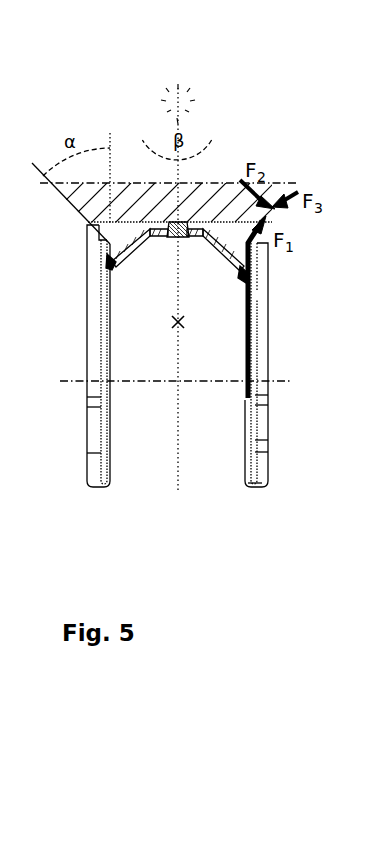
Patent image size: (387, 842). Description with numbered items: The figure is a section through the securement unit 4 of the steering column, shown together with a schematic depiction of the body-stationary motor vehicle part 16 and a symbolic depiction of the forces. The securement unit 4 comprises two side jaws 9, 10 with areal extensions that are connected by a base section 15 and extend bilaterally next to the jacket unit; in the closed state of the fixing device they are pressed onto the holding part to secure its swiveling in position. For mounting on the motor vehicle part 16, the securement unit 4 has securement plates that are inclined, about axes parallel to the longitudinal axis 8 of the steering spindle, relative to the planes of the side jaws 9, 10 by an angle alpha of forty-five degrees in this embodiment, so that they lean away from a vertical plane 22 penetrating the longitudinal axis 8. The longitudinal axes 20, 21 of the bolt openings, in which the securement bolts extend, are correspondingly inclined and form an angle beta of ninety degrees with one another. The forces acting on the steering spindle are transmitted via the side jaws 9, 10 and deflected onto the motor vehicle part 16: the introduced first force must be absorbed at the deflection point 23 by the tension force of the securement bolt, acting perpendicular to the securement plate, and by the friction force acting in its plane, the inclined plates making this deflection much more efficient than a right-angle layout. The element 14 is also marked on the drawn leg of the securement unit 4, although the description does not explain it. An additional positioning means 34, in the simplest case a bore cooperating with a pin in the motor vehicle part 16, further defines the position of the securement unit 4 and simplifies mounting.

The securement unit 4 is at (80, 511).
The longitudinal axis of steering spindle 8 is at (172, 320).
The side jaw 9 is at (100, 322).
The side jaw 10 is at (245, 438).
The leg section 14 is at (212, 382).
The base section 15 is at (197, 232).
The body-stationary motor vehicle part 16 is at (157, 202).
The longitudinal axis of bolt opening 20 is at (134, 165).
The longitudinal axis of bolt opening 21 is at (201, 136).
The vertical plane 22 is at (241, 479).
The deflection point 23 is at (269, 247).
The positioning means 34 is at (286, 309).